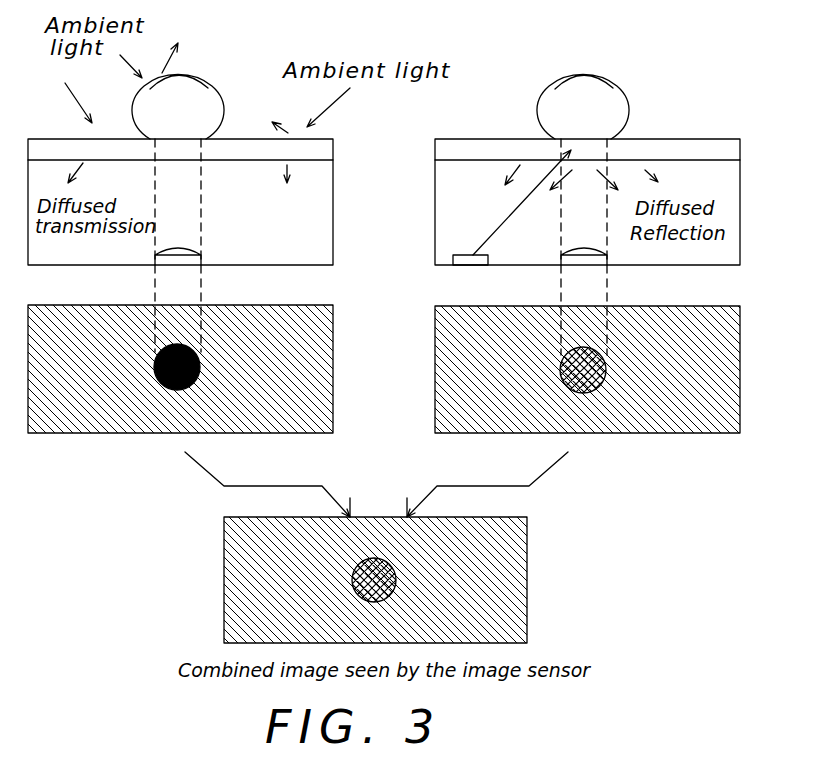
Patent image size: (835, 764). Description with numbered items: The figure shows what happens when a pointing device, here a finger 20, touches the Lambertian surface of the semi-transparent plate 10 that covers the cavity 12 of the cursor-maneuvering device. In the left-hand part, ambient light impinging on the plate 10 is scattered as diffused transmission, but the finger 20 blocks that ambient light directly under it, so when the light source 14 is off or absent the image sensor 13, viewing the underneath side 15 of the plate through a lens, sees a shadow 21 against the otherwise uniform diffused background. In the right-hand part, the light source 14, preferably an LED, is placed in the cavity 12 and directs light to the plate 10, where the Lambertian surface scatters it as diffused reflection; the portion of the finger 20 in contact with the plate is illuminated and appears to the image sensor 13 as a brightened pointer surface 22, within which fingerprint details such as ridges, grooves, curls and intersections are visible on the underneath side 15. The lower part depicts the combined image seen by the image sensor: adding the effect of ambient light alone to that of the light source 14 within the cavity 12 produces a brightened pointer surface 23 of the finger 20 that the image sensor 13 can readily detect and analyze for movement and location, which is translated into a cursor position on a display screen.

The semi-transparent plate 10 is at (318, 149).
The cavity 12 is at (335, 207).
The image sensor 13 is at (165, 262).
The light source 14 is at (478, 266).
The underneath side of the semi-transparent plate 15 is at (333, 372).
The finger 20 is at (223, 110).
The shadow 21 is at (195, 383).
The brightened pointer surface 22 is at (602, 383).
The brightened pointer surface 23 is at (393, 592).